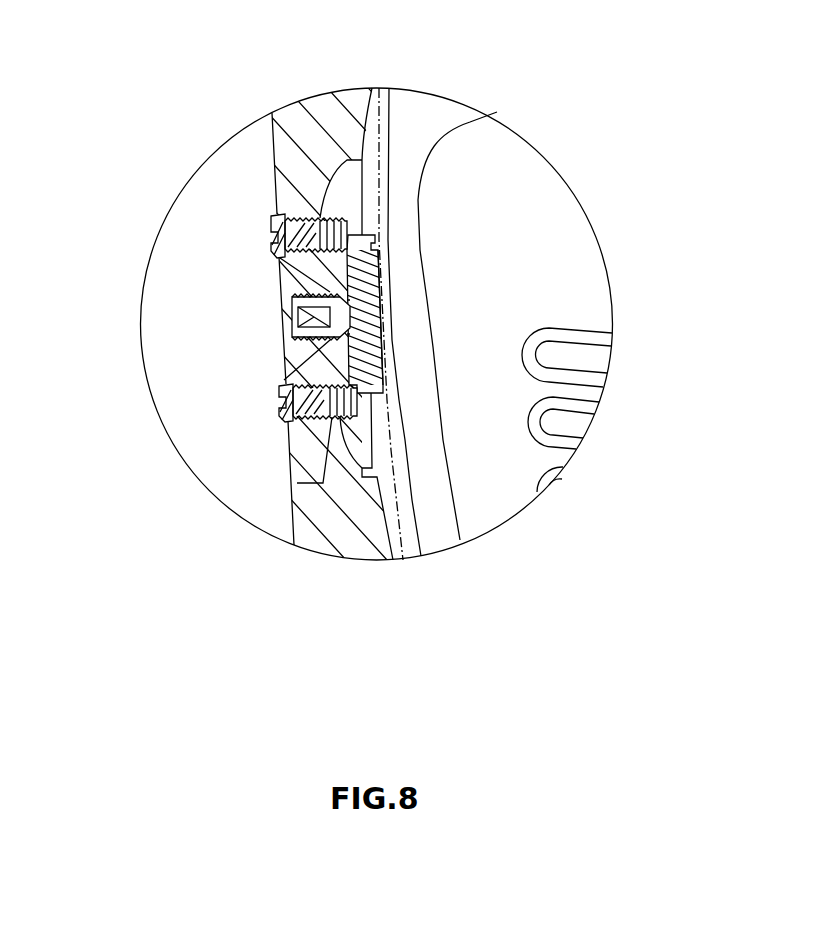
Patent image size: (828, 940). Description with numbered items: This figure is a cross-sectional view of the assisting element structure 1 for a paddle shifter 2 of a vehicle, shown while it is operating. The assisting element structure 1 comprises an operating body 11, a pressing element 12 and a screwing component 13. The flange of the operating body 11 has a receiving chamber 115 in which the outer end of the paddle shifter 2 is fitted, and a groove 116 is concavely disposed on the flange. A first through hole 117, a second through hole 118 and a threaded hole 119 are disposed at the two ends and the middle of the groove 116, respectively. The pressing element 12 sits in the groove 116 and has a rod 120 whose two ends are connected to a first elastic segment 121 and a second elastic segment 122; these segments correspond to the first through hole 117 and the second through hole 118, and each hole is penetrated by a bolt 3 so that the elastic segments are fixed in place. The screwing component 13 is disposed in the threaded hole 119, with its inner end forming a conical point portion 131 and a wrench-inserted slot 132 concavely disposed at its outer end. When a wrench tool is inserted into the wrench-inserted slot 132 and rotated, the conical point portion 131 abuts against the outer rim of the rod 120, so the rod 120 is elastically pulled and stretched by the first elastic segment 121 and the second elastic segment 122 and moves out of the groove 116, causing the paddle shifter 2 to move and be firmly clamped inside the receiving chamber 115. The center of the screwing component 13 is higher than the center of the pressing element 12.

The assisting element structure 1 is at (543, 223).
The paddle shifter 2 is at (381, 127).
The bolt 3 is at (278, 247).
The operating body 11 is at (317, 113).
The pressing element 12 is at (373, 303).
The screwing component 13 is at (283, 299).
The receiving chamber 115 is at (457, 187).
The groove 116 is at (368, 152).
The first through hole 117 is at (297, 211).
The second through hole 118 is at (296, 450).
The threaded hole 119 is at (285, 360).
The rod 120 is at (358, 273).
The first elastic segment 121 is at (315, 178).
The second elastic segment 122 is at (323, 487).
The conical point portion 131 is at (349, 321).
The wrench-inserted slot 132 is at (303, 322).